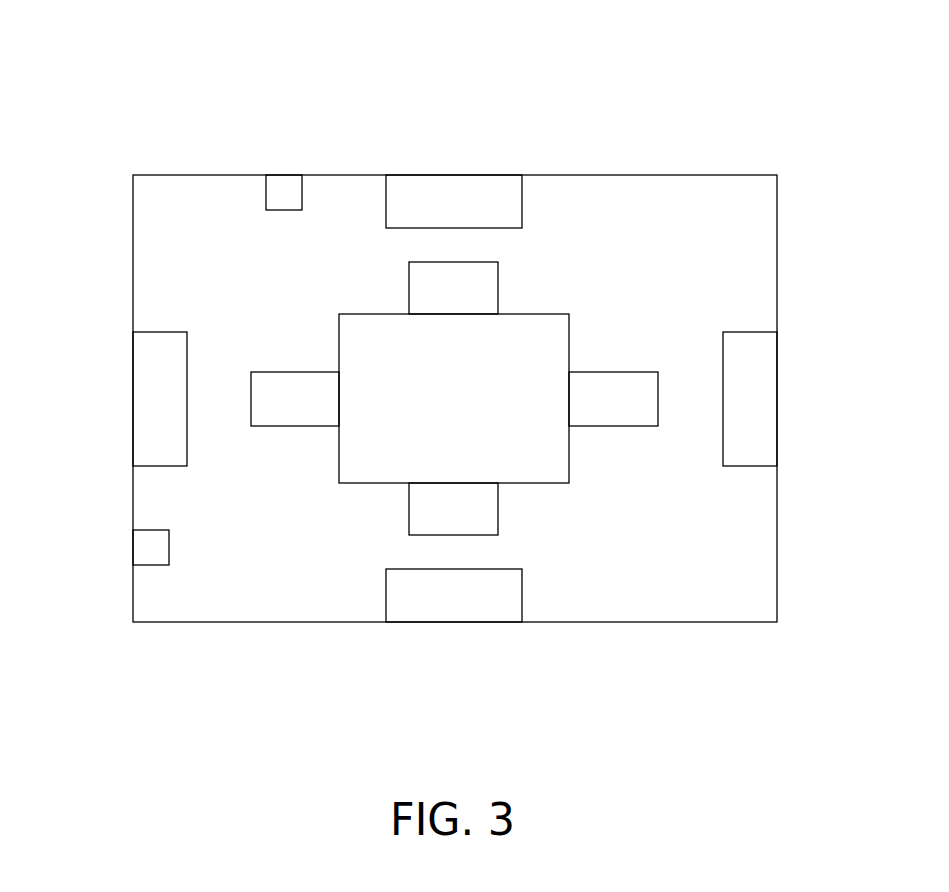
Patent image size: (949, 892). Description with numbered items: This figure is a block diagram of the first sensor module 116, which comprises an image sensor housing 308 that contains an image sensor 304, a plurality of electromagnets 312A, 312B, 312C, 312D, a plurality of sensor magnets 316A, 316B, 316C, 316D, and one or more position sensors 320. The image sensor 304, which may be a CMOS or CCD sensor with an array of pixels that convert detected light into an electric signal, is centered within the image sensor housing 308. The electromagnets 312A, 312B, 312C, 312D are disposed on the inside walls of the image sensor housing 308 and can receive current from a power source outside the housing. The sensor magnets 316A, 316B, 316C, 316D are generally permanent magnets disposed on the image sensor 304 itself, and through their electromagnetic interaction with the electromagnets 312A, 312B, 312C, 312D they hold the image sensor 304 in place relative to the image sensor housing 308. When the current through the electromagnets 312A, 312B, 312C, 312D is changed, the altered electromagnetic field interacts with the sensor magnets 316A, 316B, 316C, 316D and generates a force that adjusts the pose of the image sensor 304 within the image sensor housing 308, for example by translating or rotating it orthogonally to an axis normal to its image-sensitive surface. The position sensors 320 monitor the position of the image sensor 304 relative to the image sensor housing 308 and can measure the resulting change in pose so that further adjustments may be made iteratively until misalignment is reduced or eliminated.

The first sensor module 116 is at (842, 84).
The image sensor housing 308 is at (620, 175).
The image sensor 304 is at (518, 340).
The electromagnet 312A is at (460, 198).
The electromagnet 312B is at (760, 404).
The electromagnet 312C is at (450, 612).
The electromagnet 312D is at (148, 393).
The sensor magnet 316A is at (427, 288).
The sensor magnet 316B is at (615, 385).
The sensor magnet 316C is at (475, 517).
The sensor magnet 316D is at (308, 403).
The position sensor 320 is at (288, 190).